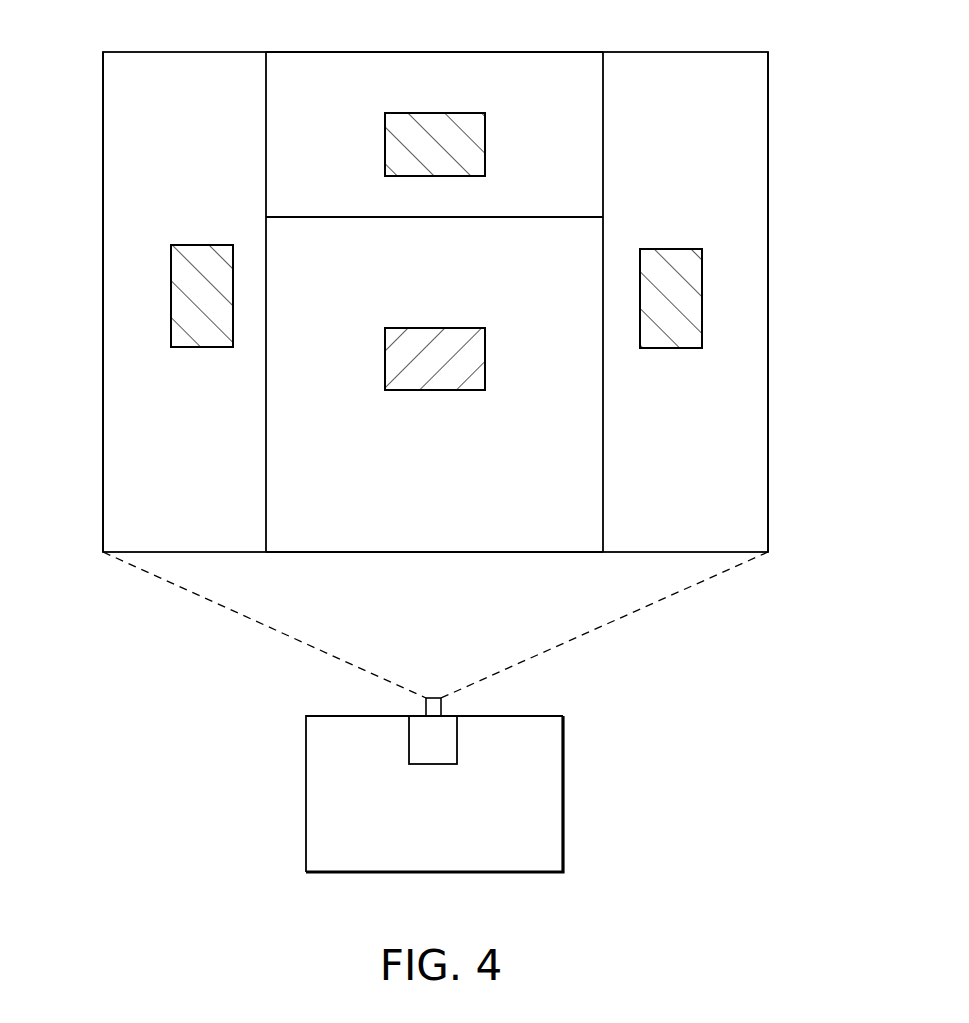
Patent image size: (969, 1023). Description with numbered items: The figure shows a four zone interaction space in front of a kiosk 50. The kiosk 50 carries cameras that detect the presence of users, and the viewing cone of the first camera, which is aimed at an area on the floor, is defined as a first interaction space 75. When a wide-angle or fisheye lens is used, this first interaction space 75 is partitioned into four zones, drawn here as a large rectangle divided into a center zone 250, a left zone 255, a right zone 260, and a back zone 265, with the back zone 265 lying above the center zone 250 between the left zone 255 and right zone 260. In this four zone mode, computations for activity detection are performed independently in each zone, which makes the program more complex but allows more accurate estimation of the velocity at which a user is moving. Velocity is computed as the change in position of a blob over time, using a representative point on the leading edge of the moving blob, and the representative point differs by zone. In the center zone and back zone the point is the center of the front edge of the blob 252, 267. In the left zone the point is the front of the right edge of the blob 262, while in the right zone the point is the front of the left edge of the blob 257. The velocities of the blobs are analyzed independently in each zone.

The first interaction space 75 is at (846, 252).
The kiosk 50 is at (563, 752).
The center zone 250 is at (397, 553).
The blob 252 is at (437, 395).
The left zone 255 is at (768, 475).
The blob 257 is at (637, 353).
The right zone 260 is at (103, 353).
The blob 262 is at (235, 349).
The back zone 265 is at (510, 52).
The blob 267 is at (437, 179).